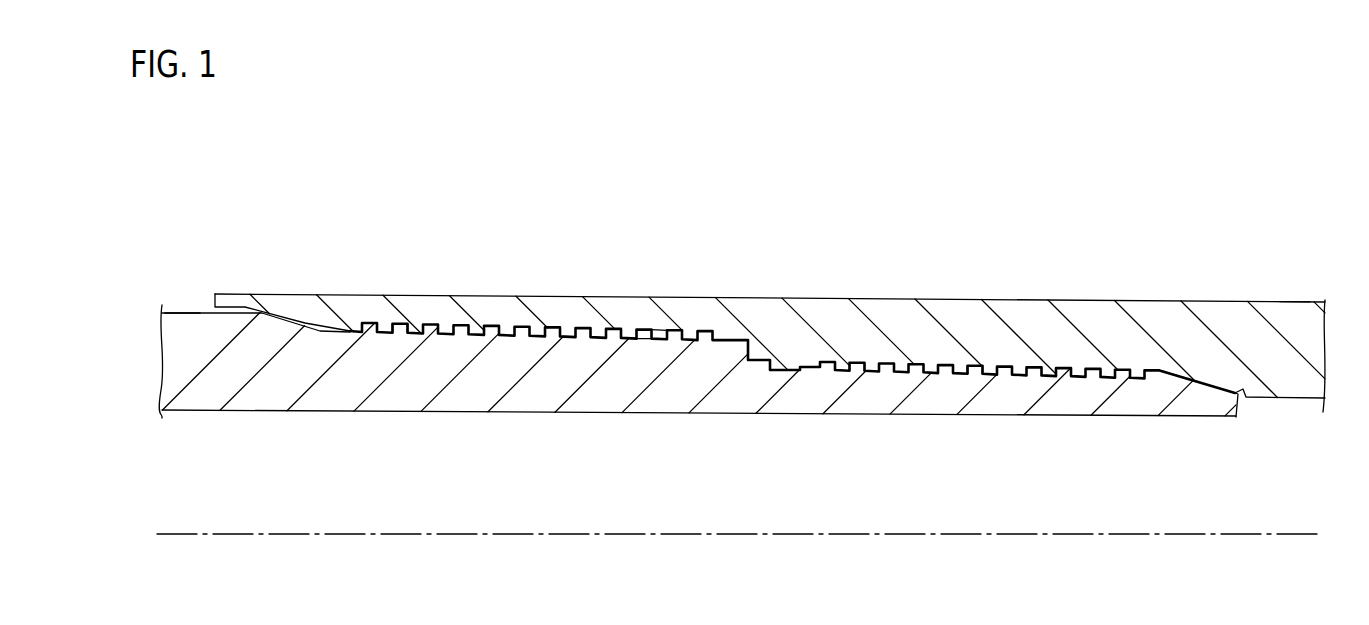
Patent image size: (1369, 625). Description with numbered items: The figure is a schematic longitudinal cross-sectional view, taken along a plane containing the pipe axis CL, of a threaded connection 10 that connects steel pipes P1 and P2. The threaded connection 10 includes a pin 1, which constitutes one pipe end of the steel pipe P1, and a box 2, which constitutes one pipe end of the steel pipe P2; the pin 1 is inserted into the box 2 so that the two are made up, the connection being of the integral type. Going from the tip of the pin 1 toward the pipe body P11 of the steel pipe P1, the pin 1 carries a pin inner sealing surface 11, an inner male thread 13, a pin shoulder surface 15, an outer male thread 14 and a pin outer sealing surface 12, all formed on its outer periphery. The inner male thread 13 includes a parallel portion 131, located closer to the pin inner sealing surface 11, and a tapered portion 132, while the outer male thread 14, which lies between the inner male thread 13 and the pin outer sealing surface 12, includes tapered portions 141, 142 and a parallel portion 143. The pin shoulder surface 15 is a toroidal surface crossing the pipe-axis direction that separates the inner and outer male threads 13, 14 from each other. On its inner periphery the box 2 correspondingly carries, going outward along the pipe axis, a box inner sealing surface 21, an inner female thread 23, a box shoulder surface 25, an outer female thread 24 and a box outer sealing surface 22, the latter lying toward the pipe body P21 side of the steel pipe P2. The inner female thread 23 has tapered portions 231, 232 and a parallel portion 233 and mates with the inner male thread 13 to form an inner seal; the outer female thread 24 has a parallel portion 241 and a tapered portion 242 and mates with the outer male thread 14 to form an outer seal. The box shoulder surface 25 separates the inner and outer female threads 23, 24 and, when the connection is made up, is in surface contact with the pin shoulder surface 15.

The threaded connection 10 is at (1110, 152).
The pin 1 is at (1238, 419).
The pin inner sealing surface 11 is at (1190, 383).
The pin outer sealing surface 12 is at (286, 316).
The inner male thread 13 is at (1145, 460).
The parallel portion 131 is at (1110, 380).
The tapered portion 132 is at (976, 376).
The outer male thread 14 is at (685, 460).
The tapered portion 141 is at (400, 335).
The tapered portion 142 is at (492, 336).
The parallel portion 143 is at (655, 347).
The pin shoulder surface 15 is at (745, 360).
The box 2 is at (671, 290).
The box inner sealing surface 21 is at (1192, 380).
The box outer sealing surface 22 is at (287, 318).
The inner female thread 23 is at (1133, 248).
The tapered portion 231 is at (1110, 366).
The tapered portion 232 is at (970, 360).
The parallel portion 233 is at (855, 355).
The outer female thread 24 is at (523, 223).
The parallel portion 241 is at (401, 321).
The tapered portion 242 is at (491, 325).
The box shoulder surface 25 is at (756, 342).
The steel pipe P1 is at (143, 292).
The pipe body P11 is at (178, 313).
The steel pipe P2 is at (1320, 289).
The second end surface position P21 is at (1293, 300).
The pipe axis CL is at (755, 535).